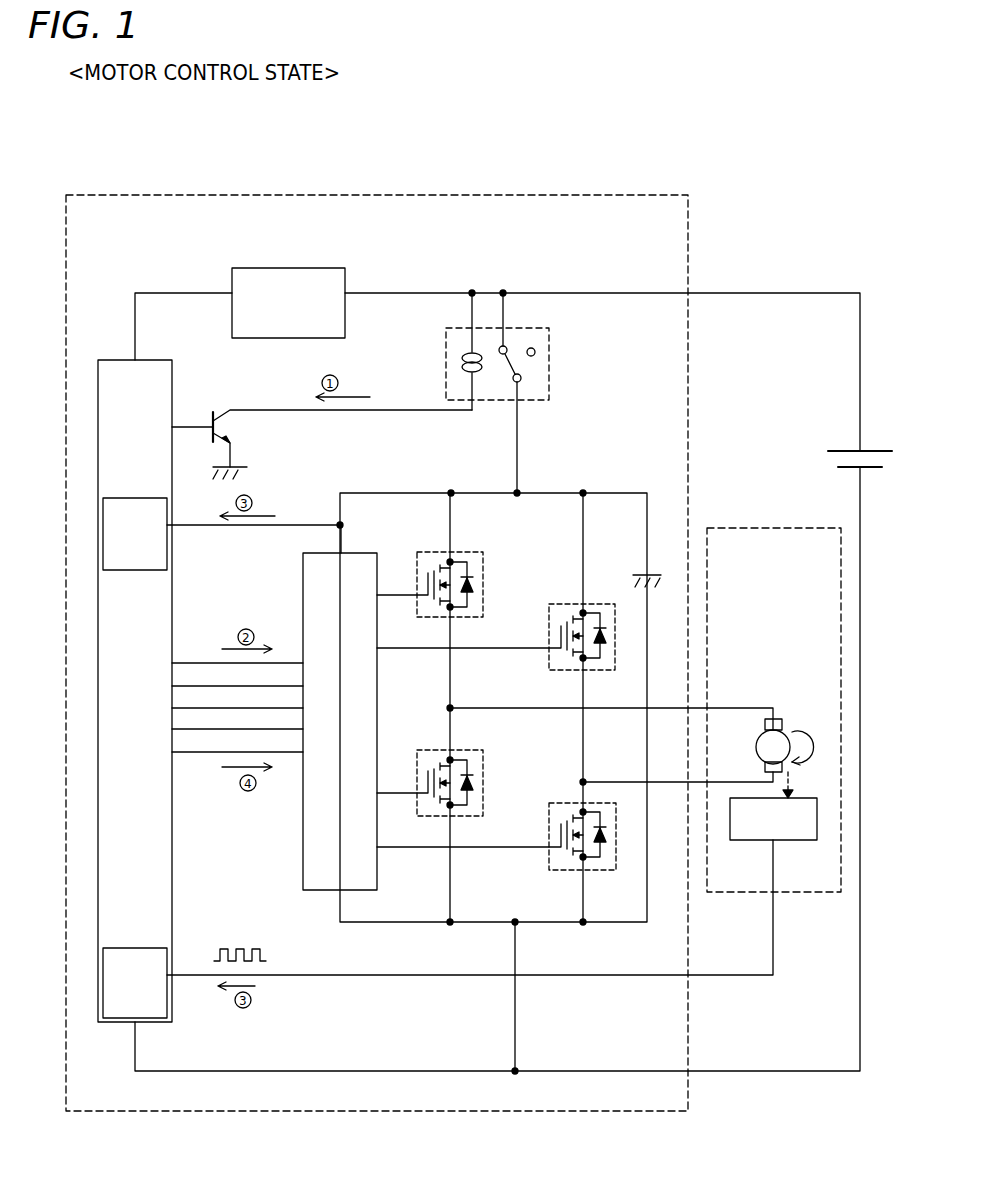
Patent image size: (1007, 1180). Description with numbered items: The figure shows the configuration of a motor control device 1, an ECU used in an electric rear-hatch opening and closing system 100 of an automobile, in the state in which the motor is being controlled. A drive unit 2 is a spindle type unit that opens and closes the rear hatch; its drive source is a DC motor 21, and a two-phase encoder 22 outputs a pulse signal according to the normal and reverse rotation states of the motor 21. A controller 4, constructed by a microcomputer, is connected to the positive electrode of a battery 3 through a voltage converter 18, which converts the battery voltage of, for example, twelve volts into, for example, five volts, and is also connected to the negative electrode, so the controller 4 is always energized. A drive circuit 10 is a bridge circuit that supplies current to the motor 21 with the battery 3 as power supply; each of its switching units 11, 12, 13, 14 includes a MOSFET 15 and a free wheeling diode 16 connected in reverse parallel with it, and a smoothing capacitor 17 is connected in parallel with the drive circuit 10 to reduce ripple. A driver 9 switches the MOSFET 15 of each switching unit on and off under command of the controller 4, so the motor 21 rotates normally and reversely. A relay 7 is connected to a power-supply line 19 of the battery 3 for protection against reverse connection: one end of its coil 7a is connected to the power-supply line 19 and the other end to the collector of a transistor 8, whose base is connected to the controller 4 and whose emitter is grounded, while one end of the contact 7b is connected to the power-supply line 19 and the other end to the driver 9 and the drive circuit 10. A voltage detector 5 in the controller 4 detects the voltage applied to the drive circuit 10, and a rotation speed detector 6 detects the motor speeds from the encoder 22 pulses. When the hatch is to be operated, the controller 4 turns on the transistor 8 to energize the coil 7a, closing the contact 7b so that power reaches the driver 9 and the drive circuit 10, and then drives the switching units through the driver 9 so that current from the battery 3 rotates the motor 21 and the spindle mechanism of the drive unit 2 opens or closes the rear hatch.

The electric rear-hatch opening and closing system 100 is at (806, 133).
The motor control device 1 is at (146, 194).
The drive unit 2 is at (773, 527).
The battery 3 is at (838, 442).
The controller 4 is at (115, 358).
The voltage detector 5 is at (126, 497).
The rotation speed detector 6 is at (127, 946).
The relay 7 is at (444, 356).
The coil 7a is at (458, 370).
The contact 7b is at (535, 372).
The transistor 8 is at (212, 406).
The driver 9 is at (362, 552).
The drive circuit 10 is at (478, 481).
The switching unit 11 is at (428, 552).
The switching unit 12 is at (560, 604).
The switching unit 13 is at (428, 750).
The switching unit 14 is at (560, 803).
The MOSFET 15 is at (498, 725).
The free wheeling diode 16 is at (533, 727).
The smoothing capacitor 17 is at (641, 562).
The voltage converter 18 is at (323, 267).
The power-supply line 19 is at (647, 292).
The motor 21 is at (786, 727).
The encoder 22 is at (792, 842).